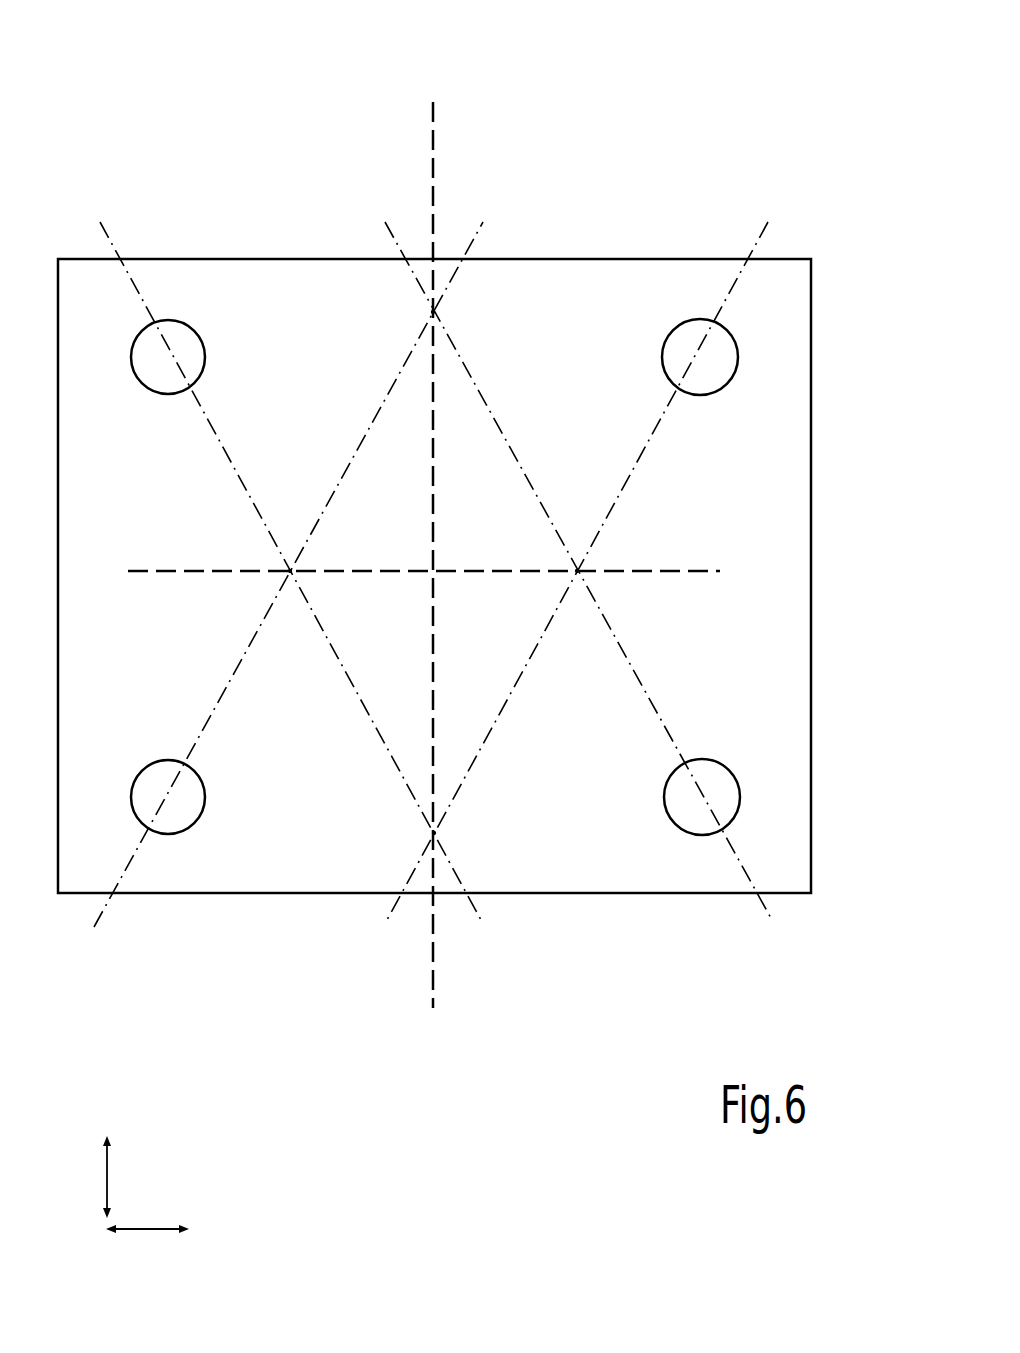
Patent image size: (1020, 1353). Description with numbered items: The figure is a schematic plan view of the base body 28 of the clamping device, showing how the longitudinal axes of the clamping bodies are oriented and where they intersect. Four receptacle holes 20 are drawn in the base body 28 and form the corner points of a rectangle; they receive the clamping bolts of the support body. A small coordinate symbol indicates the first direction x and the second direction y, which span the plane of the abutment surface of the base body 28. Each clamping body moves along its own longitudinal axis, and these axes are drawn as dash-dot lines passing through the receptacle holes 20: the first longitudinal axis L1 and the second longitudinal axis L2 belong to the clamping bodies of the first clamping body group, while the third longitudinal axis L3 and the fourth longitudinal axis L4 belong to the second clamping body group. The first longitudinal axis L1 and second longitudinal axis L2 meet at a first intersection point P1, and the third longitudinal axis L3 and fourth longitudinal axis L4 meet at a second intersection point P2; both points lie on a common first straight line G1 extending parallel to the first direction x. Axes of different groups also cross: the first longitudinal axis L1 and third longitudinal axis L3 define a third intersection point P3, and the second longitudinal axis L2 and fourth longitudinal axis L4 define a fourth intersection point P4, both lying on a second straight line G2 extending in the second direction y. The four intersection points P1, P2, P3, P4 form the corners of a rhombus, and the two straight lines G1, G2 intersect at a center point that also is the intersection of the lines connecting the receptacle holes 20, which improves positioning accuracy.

The receptacle holes 20 is at (133, 370).
The base body 28 is at (577, 894).
The first longitudinal axis L1 is at (112, 250).
The second longitudinal axis L2 is at (108, 900).
The third longitudinal axis L3 is at (757, 248).
The fourth longitudinal axis L4 is at (762, 903).
The first straight line G1 is at (166, 574).
The second straight line G2 is at (435, 143).
The first intersection point P1 is at (290, 575).
The second intersection point P2 is at (578, 575).
The third intersection point P3 is at (436, 832).
The fourth intersection point P4 is at (431, 311).
The first direction x is at (143, 1230).
The second direction y is at (107, 1172).